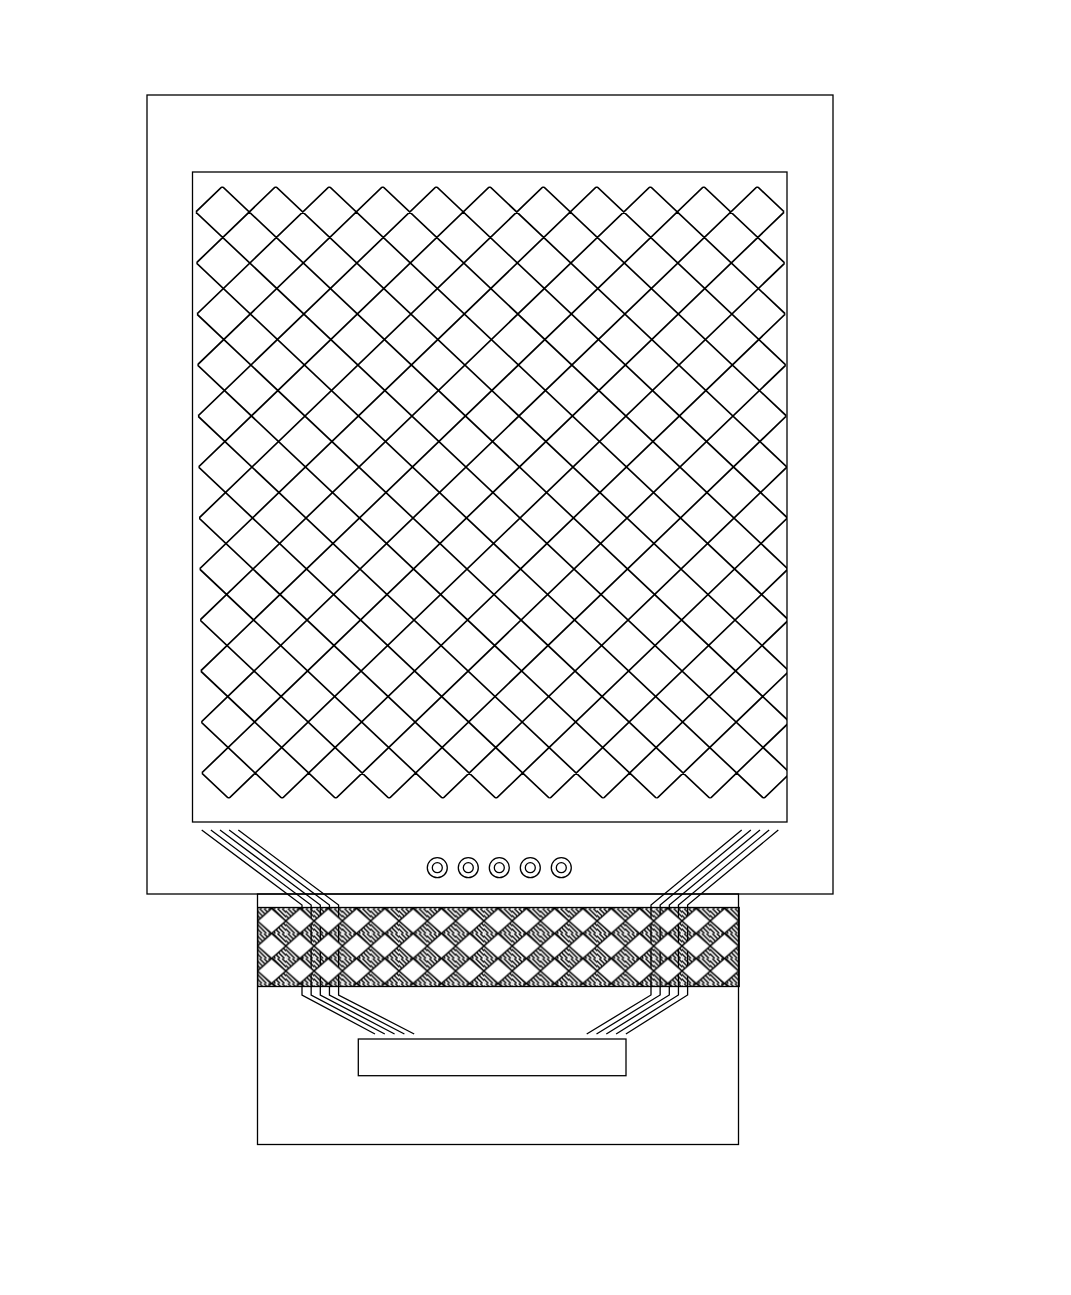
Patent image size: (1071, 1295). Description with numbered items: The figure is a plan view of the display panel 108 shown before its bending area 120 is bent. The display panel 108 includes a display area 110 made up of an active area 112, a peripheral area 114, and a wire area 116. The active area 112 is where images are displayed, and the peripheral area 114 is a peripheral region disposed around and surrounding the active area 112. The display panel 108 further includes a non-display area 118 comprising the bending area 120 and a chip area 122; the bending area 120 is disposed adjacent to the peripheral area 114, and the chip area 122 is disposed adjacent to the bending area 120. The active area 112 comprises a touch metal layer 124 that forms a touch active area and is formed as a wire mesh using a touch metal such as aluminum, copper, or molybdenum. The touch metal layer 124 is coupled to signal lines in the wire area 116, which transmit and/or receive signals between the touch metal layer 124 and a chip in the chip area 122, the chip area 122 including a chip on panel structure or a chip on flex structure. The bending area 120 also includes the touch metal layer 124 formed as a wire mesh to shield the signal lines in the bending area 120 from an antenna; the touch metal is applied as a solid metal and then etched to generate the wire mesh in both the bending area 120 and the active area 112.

The display panel 108 is at (877, 72).
The display area 110 is at (120, 894).
The active area 112 is at (778, 652).
The peripheral area 114 is at (815, 512).
The wire area 116 is at (752, 853).
The non-display area 118 is at (846, 895).
The bending area 120 is at (247, 907).
The chip area 122 is at (358, 1057).
The touch metal layer 124 is at (758, 220).